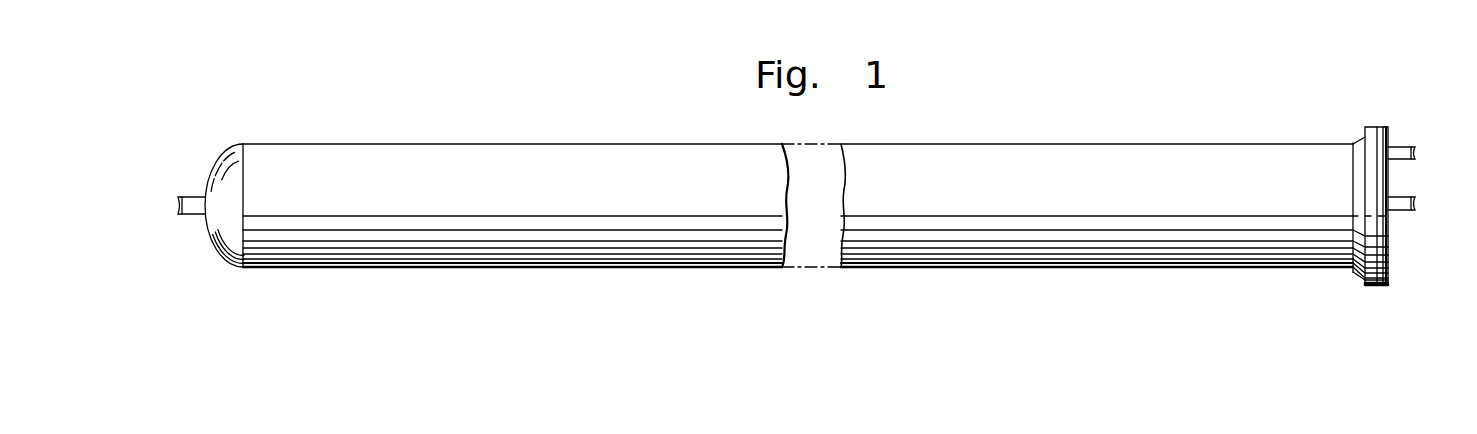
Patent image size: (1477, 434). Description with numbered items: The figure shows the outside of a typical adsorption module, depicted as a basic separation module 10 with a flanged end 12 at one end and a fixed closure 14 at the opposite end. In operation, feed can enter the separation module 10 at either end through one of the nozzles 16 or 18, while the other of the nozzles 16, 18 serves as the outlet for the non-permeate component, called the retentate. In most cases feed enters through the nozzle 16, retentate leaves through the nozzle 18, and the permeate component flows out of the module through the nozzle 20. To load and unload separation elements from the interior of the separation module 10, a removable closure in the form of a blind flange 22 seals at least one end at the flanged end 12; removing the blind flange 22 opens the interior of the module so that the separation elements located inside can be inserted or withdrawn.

The separation module 10 is at (598, 112).
The flanged end 12 is at (1363, 136).
The fixed closure 14 is at (213, 239).
The nozzle 16 is at (1398, 147).
The nozzle 18 is at (193, 197).
The nozzle 20 is at (1405, 212).
The blind flange 22 is at (1382, 288).